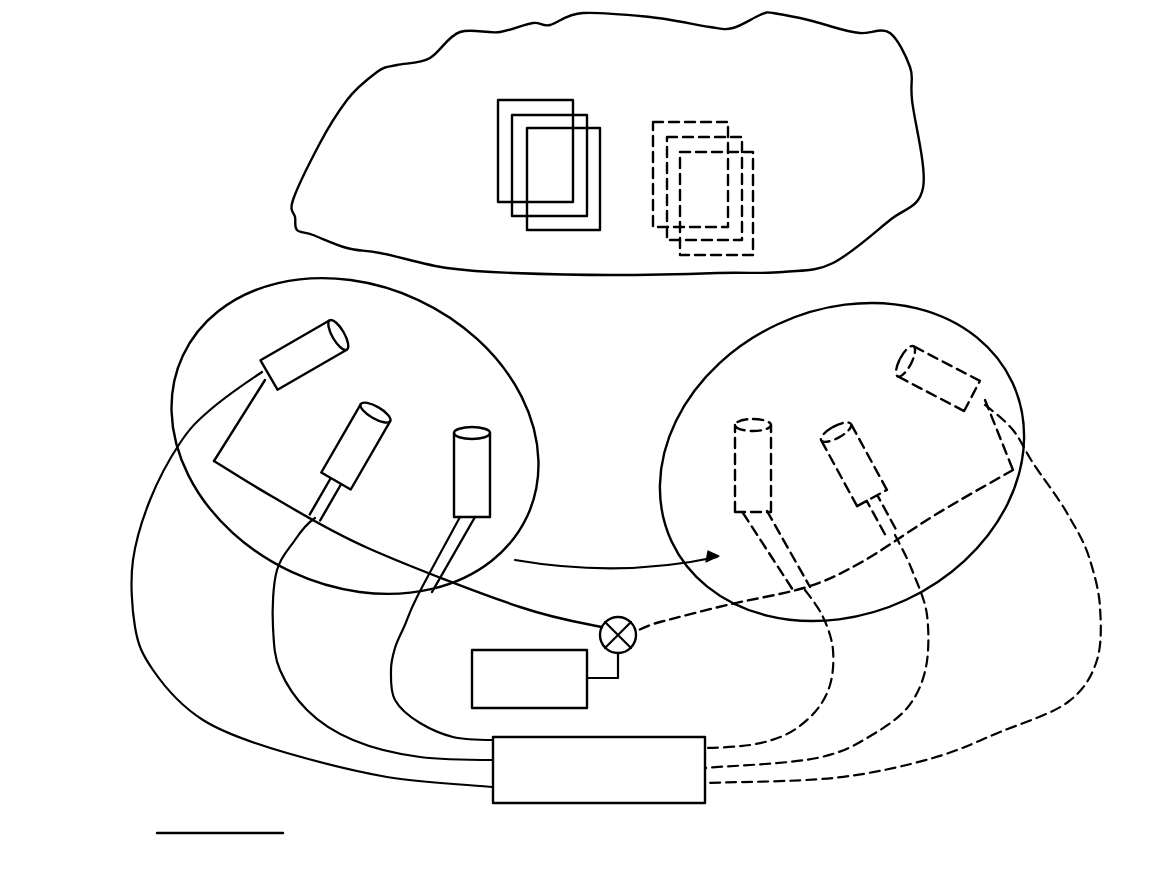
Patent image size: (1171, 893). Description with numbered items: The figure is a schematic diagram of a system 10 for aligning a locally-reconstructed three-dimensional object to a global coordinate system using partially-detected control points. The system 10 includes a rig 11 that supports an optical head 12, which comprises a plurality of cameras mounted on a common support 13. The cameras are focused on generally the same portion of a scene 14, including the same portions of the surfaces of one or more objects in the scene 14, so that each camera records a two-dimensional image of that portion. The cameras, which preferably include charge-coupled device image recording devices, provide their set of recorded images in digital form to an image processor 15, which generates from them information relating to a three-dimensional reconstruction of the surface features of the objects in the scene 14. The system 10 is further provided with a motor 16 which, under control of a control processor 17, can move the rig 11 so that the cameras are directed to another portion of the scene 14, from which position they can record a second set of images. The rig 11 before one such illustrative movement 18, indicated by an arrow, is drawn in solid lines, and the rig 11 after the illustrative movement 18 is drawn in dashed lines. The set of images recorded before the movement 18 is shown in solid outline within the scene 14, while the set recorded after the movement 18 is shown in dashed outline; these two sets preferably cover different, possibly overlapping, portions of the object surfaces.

The system 10 is at (1050, 300).
The rig 11 is at (594, 449).
The optical head 12 is at (160, 389).
The common support 13 is at (272, 496).
The scene 14 is at (318, 143).
The image processor 15 is at (599, 770).
The motor 16 is at (636, 645).
The control processor 17 is at (529, 679).
The illustrative movement 18 is at (600, 567).